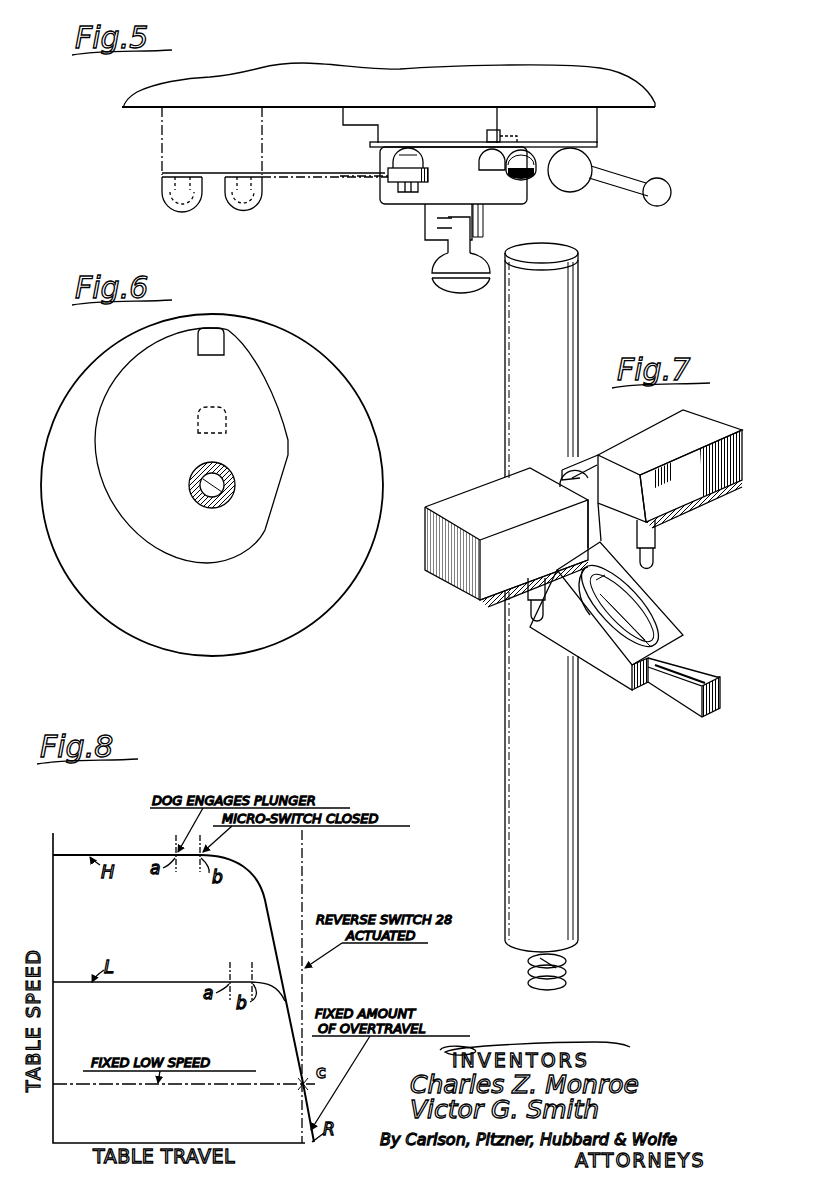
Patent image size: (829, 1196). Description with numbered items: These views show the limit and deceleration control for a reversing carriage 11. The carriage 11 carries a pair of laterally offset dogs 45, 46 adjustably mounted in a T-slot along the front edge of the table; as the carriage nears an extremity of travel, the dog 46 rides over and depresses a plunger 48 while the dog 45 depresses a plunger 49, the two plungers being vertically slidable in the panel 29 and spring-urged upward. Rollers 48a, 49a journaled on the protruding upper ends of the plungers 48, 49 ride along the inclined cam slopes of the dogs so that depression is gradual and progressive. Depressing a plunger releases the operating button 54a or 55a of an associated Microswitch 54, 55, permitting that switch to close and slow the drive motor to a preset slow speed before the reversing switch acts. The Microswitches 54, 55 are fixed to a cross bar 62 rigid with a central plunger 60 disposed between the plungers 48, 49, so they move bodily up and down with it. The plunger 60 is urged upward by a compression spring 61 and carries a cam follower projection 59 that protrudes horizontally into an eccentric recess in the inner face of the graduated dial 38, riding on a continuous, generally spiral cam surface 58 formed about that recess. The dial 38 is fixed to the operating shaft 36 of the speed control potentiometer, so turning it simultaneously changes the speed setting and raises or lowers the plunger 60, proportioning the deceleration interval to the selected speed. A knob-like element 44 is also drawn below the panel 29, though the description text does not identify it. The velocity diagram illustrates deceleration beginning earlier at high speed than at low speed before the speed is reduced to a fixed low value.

In FIG. 5, the carriage 11 is at (627, 106).
In FIG. 5, the panel 29 is at (393, 199).
In FIG. 6, the operating shaft 36 is at (203, 487).
In FIG. 6, the graduated dial 38 is at (330, 592).
In FIG. 5, the knob 44 is at (436, 283).
In FIG. 5, the dog 45 is at (287, 181).
In FIG. 5, the dog 46 is at (460, 148).
In FIG. 5, the plunger 48 is at (495, 170).
In FIG. 5, the roller 48a is at (486, 138).
In FIG. 5, the plunger 49 is at (398, 160).
In FIG. 5, the roller 49a is at (428, 176).
In FIG. 7, the Microswitch 54 is at (710, 433).
In FIG. 7, the operating button 54a is at (655, 553).
In FIG. 7, the Microswitch 55 is at (487, 505).
In FIG. 7, the operating button 55a is at (531, 610).
In FIG. 6, the cam surface 58 is at (96, 455).
In FIG. 6, the cam follower projection 59 is at (202, 356).
In FIG. 7, the cam follower projection 59 is at (708, 676).
In FIG. 7, the plunger 60 is at (578, 305).
In FIG. 7, the compression spring 61 is at (528, 969).
In FIG. 7, the cross bar 62 is at (601, 447).